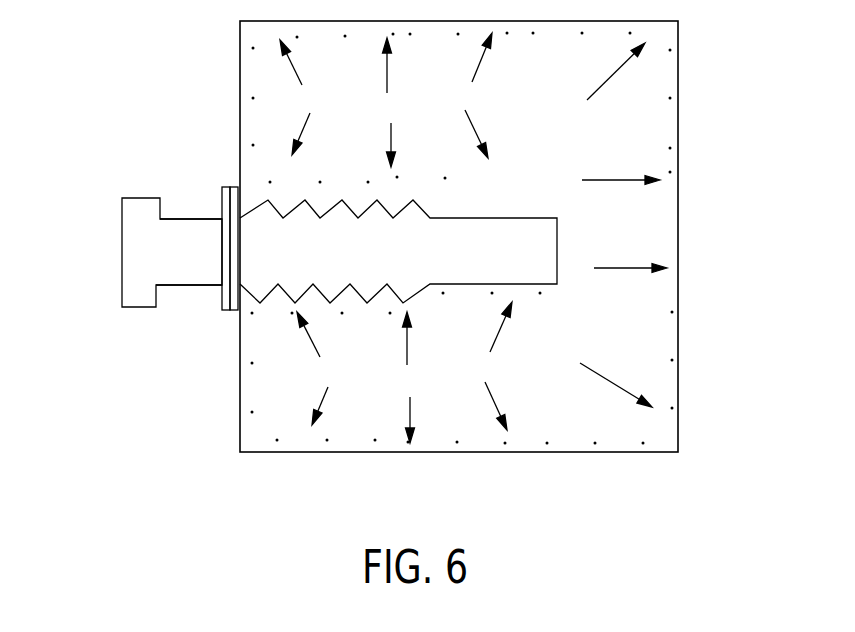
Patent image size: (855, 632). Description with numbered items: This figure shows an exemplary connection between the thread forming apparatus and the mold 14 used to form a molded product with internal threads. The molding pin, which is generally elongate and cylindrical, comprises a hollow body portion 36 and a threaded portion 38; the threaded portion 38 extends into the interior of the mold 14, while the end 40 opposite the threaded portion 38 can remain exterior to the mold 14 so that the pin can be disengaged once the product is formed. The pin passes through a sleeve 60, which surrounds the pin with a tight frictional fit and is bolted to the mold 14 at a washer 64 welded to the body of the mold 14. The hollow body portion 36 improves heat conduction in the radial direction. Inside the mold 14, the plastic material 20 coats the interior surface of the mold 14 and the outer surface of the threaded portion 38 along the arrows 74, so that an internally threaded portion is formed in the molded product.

The mold 14 is at (680, 304).
The plastic material 20 is at (495, 176).
The hollow body portion 36 is at (172, 218).
The threaded portion 38 is at (305, 195).
The end 40 is at (103, 211).
The sleeve 60 is at (236, 315).
The washer 64 is at (222, 303).
The arrows 74 is at (308, 116).